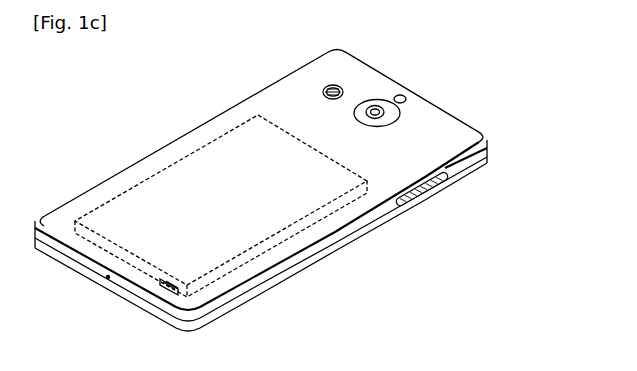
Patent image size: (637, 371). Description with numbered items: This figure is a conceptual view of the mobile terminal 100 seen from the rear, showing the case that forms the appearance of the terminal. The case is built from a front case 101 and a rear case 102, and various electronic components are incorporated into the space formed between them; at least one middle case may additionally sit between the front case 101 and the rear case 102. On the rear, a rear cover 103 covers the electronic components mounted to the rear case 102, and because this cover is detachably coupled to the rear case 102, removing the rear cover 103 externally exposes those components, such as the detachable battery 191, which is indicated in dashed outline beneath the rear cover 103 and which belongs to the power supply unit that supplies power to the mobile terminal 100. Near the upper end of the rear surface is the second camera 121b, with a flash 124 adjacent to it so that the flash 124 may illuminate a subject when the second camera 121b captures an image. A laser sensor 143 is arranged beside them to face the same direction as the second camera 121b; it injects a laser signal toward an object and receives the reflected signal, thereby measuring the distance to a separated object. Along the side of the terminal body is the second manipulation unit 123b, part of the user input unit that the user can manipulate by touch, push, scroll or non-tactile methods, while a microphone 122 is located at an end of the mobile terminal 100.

The mobile terminal 100 is at (158, 104).
The front case 101 is at (489, 163).
The rear case 102 is at (491, 150).
The rear cover 103 is at (490, 138).
The second camera 121b is at (378, 109).
The microphone 122 is at (105, 280).
The second manipulation unit 123b is at (421, 213).
The flash 124 is at (341, 87).
The laser sensor 143 is at (408, 98).
The battery 191 is at (285, 242).